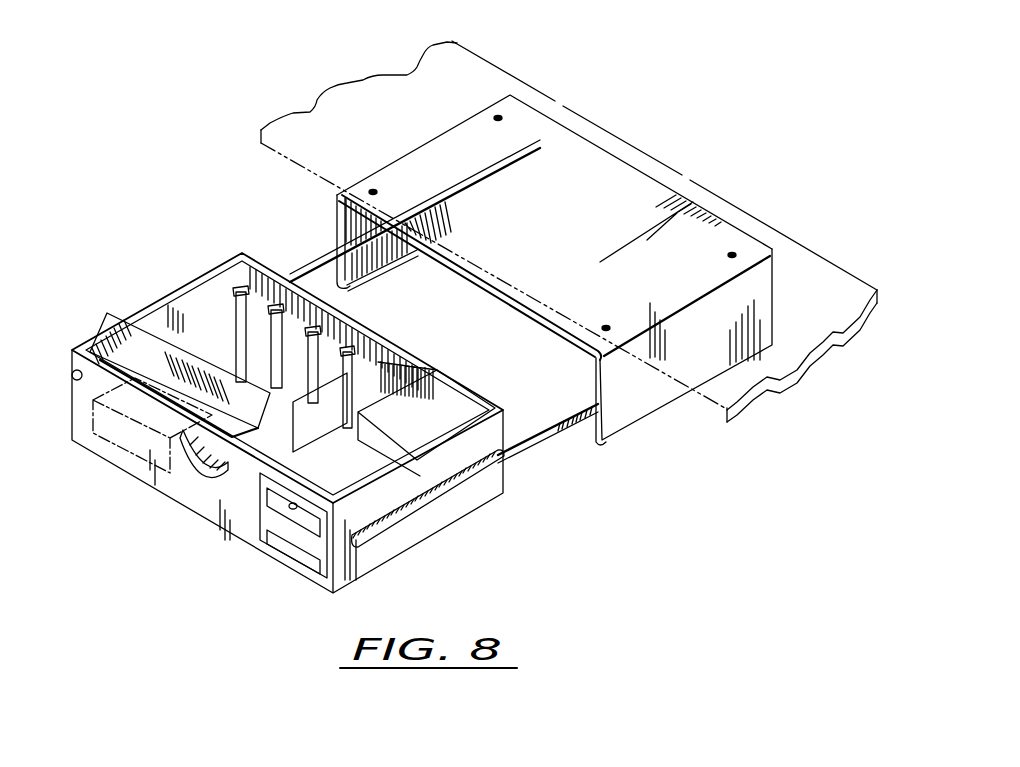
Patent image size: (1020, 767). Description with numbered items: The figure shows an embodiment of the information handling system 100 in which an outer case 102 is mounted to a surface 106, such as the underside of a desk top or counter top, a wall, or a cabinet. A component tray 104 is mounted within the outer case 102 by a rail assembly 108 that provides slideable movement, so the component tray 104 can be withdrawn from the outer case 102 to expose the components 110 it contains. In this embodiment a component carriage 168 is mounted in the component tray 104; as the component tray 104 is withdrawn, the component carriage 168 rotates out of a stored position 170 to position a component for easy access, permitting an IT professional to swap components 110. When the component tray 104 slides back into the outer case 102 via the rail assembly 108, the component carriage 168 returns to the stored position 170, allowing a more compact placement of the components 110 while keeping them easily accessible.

The information handling system 100 is at (210, 533).
The outer case 102 is at (633, 407).
The component tray 104 is at (433, 522).
The surface 106 is at (483, 87).
The rail assembly 108 is at (533, 448).
The components 110 is at (328, 402).
The component carriage 168 is at (113, 312).
The stored position 170 is at (145, 440).